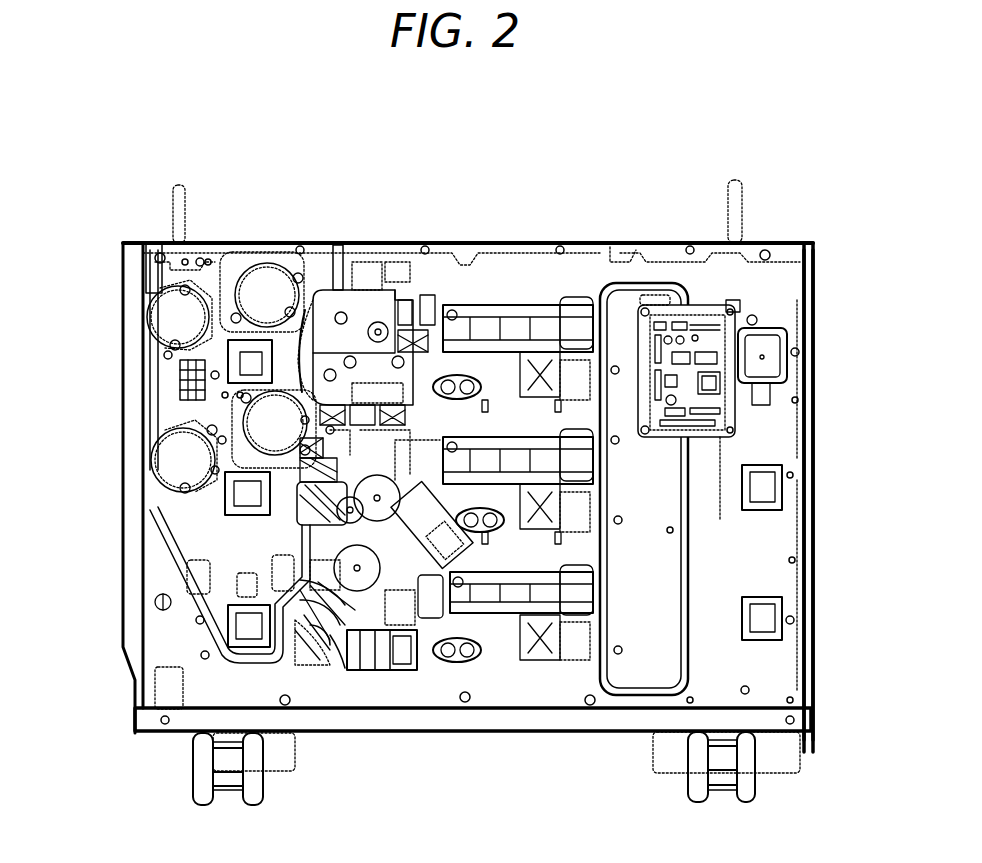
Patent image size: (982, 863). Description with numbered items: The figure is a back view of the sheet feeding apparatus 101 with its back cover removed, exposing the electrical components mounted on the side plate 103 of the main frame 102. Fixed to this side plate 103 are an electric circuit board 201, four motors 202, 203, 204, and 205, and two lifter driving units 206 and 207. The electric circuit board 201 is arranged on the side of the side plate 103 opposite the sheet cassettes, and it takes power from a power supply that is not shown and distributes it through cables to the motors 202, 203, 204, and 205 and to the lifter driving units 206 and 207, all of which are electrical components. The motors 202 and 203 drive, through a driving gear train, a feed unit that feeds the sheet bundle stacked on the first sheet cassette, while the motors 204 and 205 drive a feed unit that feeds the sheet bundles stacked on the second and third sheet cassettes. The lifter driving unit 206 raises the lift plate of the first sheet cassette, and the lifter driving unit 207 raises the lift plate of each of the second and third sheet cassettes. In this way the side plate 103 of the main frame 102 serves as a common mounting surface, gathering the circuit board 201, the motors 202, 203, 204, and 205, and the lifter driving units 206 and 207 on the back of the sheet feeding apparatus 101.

The sheet feeding apparatus 101 is at (519, 124).
The main frame 102 is at (648, 241).
The side plate 103 is at (773, 291).
The electric circuit board 201 is at (737, 420).
The motor 202 is at (278, 273).
The motor 203 is at (150, 332).
The motor 204 is at (248, 413).
The motor 205 is at (152, 462).
The lifter driving unit 206 is at (362, 312).
The lifter driving unit 207 is at (393, 620).